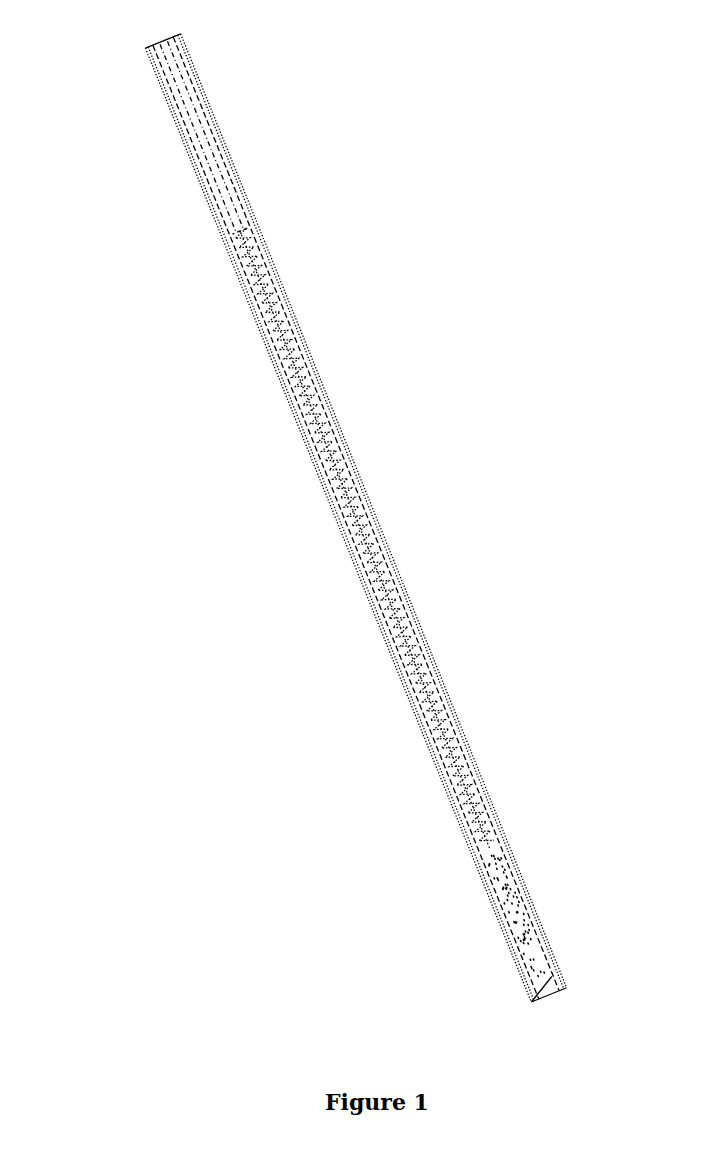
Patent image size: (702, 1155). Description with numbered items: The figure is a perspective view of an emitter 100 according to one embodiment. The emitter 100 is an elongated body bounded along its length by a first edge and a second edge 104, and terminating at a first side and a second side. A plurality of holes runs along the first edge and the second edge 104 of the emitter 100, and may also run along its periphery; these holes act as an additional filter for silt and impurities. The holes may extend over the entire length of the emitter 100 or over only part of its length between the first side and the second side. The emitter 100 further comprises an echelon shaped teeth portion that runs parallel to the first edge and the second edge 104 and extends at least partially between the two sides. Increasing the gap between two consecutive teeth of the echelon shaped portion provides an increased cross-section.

The emitter 100 is at (140, 107).
The second edge 104 is at (183, 193).